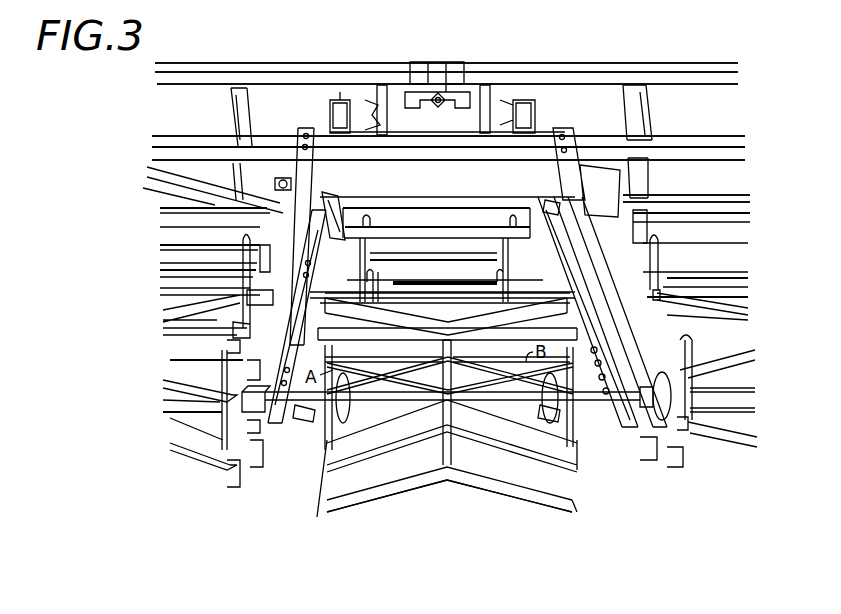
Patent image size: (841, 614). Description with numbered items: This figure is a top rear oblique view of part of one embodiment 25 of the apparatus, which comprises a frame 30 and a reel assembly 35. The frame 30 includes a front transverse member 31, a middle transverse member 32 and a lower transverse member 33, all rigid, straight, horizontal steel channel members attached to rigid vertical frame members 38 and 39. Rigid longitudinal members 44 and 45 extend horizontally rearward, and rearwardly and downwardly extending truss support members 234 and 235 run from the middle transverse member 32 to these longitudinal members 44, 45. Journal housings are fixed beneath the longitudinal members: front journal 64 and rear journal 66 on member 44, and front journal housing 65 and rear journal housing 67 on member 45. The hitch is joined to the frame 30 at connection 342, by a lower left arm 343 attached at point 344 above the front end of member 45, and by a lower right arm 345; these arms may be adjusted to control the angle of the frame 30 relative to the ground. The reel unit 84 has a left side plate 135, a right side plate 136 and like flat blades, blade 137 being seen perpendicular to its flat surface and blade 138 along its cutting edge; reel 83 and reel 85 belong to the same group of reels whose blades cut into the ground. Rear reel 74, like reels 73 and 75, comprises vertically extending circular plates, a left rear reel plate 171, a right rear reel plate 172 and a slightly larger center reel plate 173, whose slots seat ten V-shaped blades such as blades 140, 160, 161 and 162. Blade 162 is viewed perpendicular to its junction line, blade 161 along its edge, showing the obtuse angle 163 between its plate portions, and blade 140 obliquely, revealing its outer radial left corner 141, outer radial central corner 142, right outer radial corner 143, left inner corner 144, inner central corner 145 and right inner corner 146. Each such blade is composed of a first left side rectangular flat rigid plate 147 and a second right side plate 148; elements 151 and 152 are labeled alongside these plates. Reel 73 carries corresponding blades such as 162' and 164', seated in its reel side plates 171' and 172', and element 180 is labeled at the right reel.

The embodiment of apparatus 25 is at (60, 123).
The frame 30 is at (112, 62).
The front transverse member 31 is at (168, 78).
The middle transverse member 32 is at (165, 151).
The lower transverse member 33 is at (160, 195).
The reel assembly 35 is at (104, 248).
The vertical frame member 38 is at (247, 87).
The vertical frame member 39 is at (638, 92).
The longitudinal member 44 is at (285, 420).
The longitudinal member 45 is at (602, 320).
The front journal 64 is at (325, 202).
The front journal housing 65 is at (550, 203).
The rear journal 66 is at (297, 418).
The rear journal housing 67 is at (563, 425).
The reel 73 is at (148, 338).
The rear reel 74 is at (290, 490).
The rear reel 75 is at (768, 313).
The reel 83 is at (148, 208).
The reel unit 84 is at (435, 199).
The reel 85 is at (715, 228).
The left side plate 135 is at (365, 248).
The right side plate 136 is at (510, 232).
The blade 137 is at (340, 213).
The blade 138 is at (453, 285).
The V-shaped blade 140 is at (578, 553).
The outer radial left corner 141 is at (327, 508).
The outer radial central corner 142 is at (448, 478).
The right outer radial corner 143 is at (577, 522).
The left inner corner 144 is at (325, 474).
The inner central corner 145 is at (447, 385).
The right side inner corner 146 is at (575, 475).
The first left side rectangular flat rigid plate 147 is at (386, 473).
The second right side rectangular flat rigid plate 148 is at (493, 467).
The left end member 151 is at (367, 500).
The right end member 152 is at (542, 498).
The V-shaped blade 160 is at (330, 453).
The V-shaped blade 161 is at (478, 350).
The V-shaped blade 162 is at (447, 345).
The V-shaped blade 162' is at (712, 334).
The obtuse angle 163 is at (443, 392).
The left gang cross member 164' is at (202, 347).
The left rear reel plate 171 is at (309, 500).
The reel side plate 171' is at (714, 453).
The right rear reel plate 172 is at (581, 407).
The reel side plate 172' is at (221, 504).
The center reel plate 173 is at (446, 484).
The right gang beam 180 is at (748, 314).
The truss support member 234 is at (297, 157).
The truss support member 235 is at (577, 170).
The connection 342 is at (436, 82).
The lower left arm 343 is at (520, 97).
The attachment point 344 is at (345, 108).
The lower right arm 345 is at (340, 98).